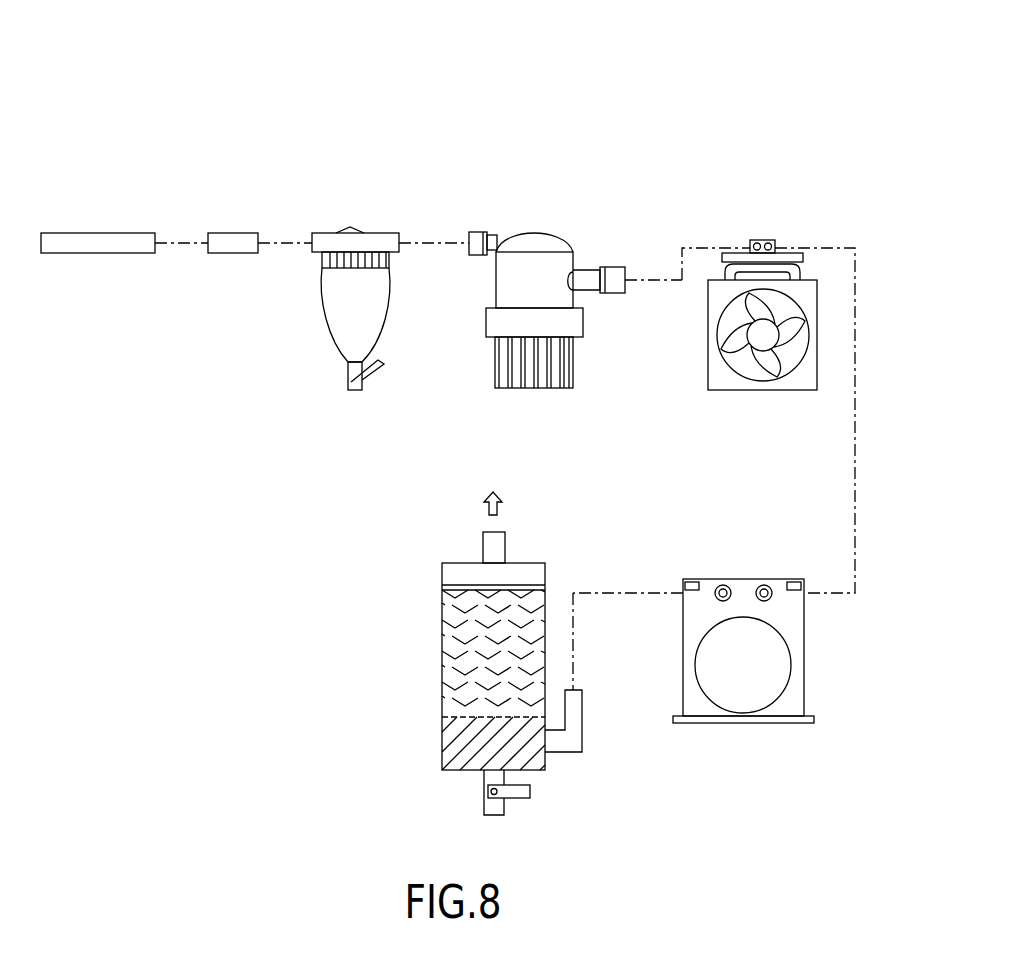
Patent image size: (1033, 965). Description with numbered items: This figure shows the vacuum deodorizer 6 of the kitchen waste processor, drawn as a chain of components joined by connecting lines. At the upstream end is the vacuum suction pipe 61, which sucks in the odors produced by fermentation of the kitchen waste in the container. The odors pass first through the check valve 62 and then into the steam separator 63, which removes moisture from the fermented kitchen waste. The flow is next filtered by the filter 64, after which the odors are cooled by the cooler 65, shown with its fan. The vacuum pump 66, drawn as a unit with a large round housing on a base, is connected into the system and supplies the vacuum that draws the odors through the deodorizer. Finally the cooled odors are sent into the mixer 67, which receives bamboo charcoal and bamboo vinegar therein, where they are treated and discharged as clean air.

The vacuum deodorizer 6 is at (658, 95).
The vacuum suction pipe 61 is at (95, 233).
The check valve 62 is at (232, 233).
The steam separator 63 is at (383, 233).
The filter 64 is at (535, 233).
The cooler 65 is at (708, 342).
The vacuum pump 66 is at (740, 579).
The mixer 67 is at (443, 665).